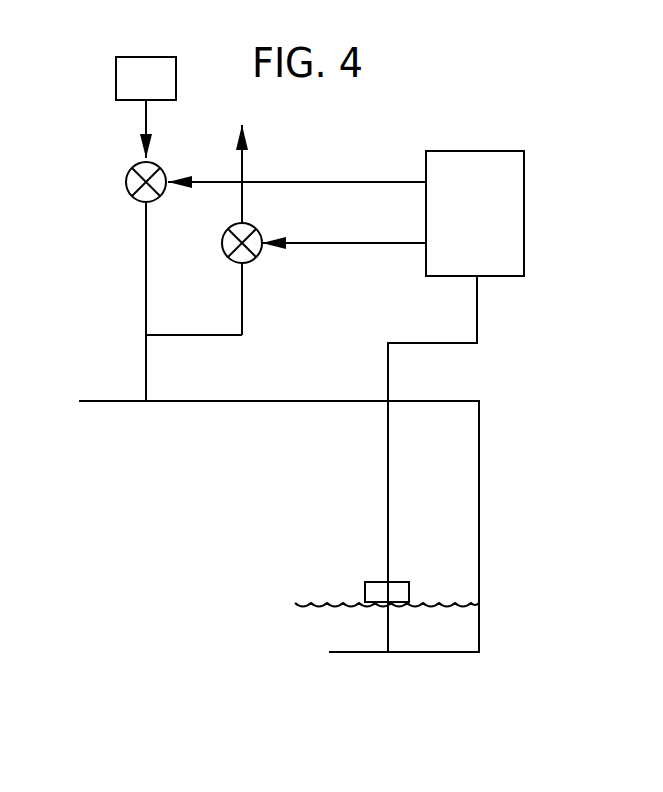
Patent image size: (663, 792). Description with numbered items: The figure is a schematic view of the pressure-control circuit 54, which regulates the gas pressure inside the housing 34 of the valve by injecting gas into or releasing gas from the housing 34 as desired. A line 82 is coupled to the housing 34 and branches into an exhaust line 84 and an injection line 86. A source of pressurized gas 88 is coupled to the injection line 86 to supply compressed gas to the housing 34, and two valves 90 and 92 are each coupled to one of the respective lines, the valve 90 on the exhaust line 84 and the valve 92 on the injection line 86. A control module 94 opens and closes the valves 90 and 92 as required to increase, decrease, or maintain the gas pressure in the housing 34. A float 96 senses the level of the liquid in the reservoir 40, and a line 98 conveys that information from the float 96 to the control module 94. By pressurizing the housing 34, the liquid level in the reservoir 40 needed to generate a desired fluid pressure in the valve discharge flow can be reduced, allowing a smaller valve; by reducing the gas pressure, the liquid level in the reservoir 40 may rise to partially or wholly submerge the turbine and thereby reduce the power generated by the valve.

The pressure-control circuit 54 is at (418, 100).
The source of pressurized gas 88 is at (116, 83).
The injection line 86 is at (146, 113).
The valve 92 is at (126, 182).
The exhaust line 84 is at (242, 168).
The valve 90 is at (258, 229).
The control module 94 is at (524, 183).
The line 98 is at (430, 343).
The line 82 is at (146, 366).
The housing 34 is at (479, 443).
The float 96 is at (372, 582).
The reservoir 40 is at (458, 580).